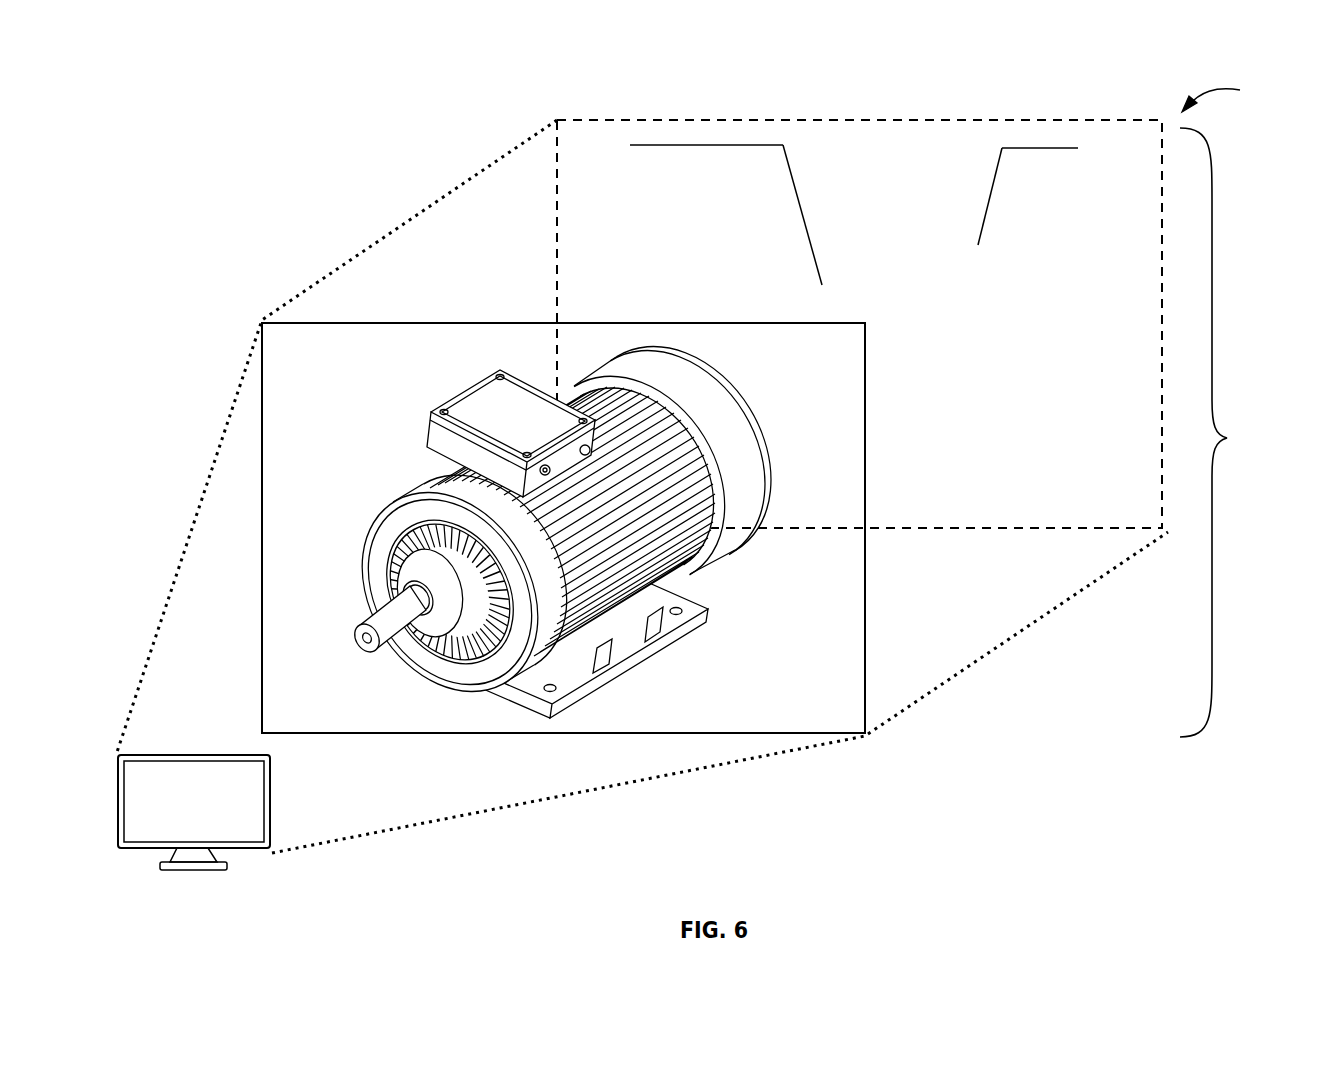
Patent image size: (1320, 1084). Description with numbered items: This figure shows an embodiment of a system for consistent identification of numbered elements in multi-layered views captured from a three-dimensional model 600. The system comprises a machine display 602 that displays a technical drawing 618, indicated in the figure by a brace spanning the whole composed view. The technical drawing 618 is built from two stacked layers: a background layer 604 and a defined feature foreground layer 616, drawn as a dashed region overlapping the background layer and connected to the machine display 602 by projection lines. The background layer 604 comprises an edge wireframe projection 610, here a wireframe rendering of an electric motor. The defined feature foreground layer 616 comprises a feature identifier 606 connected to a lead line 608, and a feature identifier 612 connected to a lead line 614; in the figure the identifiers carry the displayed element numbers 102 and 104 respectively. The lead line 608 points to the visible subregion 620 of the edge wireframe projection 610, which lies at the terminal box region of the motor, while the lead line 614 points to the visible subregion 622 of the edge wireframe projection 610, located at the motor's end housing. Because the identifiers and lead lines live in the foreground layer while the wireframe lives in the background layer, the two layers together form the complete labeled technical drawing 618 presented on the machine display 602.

The system for consistent identification of numbered elements in multi-layered views 600 is at (1231, 95).
The machine display 602 is at (247, 827).
The background layer 604 is at (670, 774).
The feature identifier 606 is at (593, 145).
The lead line 608 is at (802, 205).
The edge wireframe projection 610 is at (576, 492).
The feature identifier 612 is at (1095, 153).
The lead line 614 is at (995, 203).
The defined feature foreground layer 616 is at (1055, 100).
The technical drawing 618 is at (1275, 450).
The visible subregion 620 is at (540, 462).
The visible subregion 622 is at (728, 452).
The first defined feature 102 is at (621, 205).
The second defined feature 104 is at (1058, 208).